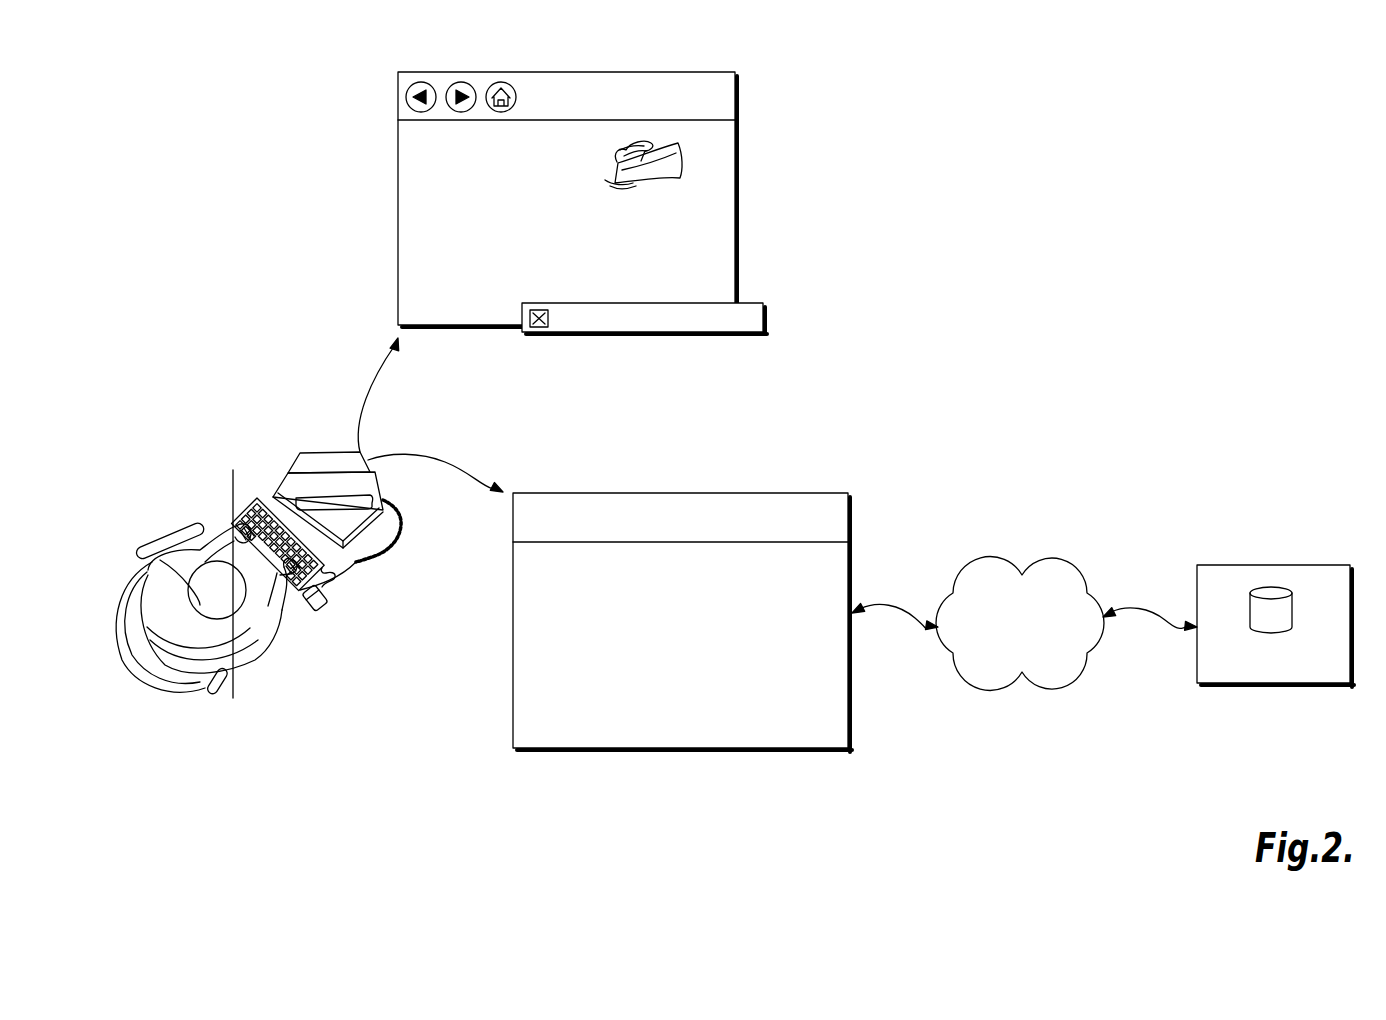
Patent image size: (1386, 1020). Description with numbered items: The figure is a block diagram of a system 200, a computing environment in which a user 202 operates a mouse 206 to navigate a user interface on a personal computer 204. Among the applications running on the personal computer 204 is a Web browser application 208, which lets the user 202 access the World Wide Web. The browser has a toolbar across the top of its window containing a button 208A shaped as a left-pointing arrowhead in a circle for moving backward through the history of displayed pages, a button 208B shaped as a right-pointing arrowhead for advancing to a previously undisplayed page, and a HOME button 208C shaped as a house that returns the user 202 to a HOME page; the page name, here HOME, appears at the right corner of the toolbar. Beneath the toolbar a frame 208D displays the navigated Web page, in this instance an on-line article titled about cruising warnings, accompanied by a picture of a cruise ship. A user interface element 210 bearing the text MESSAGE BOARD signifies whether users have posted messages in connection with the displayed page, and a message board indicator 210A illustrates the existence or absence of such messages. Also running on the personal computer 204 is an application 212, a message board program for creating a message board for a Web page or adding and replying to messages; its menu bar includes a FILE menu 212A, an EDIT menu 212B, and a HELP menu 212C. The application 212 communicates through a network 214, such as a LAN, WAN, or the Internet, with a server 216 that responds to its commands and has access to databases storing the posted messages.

The system 200 is at (215, 158).
The user 202 is at (160, 555).
The personal computer 204 is at (312, 462).
The mouse 206 is at (322, 609).
The Web browser application 208 is at (603, 78).
The button 208A is at (407, 98).
The button 208B is at (453, 80).
The HOME button 208C is at (500, 80).
The frame 208D is at (707, 197).
The user interface element 210 is at (747, 327).
The message board indicator 210A is at (543, 328).
The application 212 is at (828, 497).
The FILE menu 212A is at (515, 518).
The EDIT menu 212B is at (610, 503).
The HELP menu 212C is at (678, 502).
The network 214 is at (1022, 572).
The server 216 is at (1267, 565).